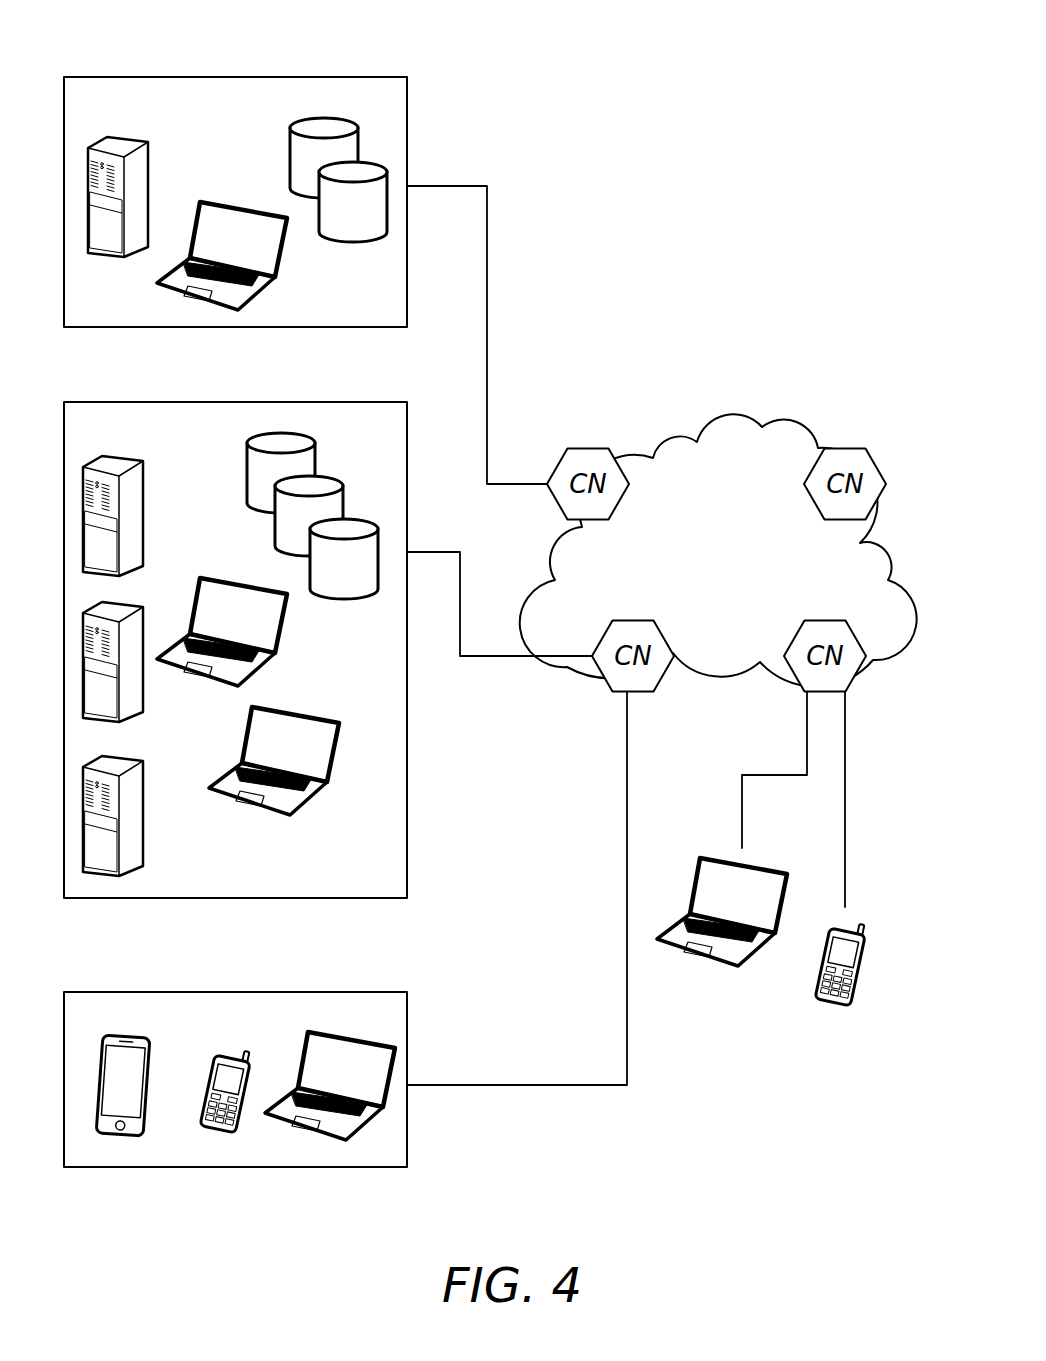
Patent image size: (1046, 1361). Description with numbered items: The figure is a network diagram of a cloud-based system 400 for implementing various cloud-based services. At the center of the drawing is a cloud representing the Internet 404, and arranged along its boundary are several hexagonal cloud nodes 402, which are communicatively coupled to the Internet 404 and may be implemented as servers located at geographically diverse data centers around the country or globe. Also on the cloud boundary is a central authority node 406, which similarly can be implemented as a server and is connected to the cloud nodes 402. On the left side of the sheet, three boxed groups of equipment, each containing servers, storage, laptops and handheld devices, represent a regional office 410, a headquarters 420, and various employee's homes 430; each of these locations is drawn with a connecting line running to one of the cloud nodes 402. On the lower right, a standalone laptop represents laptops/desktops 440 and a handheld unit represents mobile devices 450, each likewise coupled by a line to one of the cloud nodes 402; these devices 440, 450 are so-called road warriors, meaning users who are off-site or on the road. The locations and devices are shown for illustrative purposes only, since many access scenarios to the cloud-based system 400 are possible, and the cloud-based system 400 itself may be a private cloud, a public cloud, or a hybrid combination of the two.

The cloud-based system 400 is at (705, 141).
The cloud node 402 is at (578, 445).
The Internet 404 is at (730, 413).
The central authority node 406 is at (845, 445).
The regional office 410 is at (327, 76).
The headquarters 420 is at (327, 402).
The employee's homes 430 is at (327, 992).
The laptops/desktops 440 is at (722, 882).
The mobile devices 450 is at (817, 967).